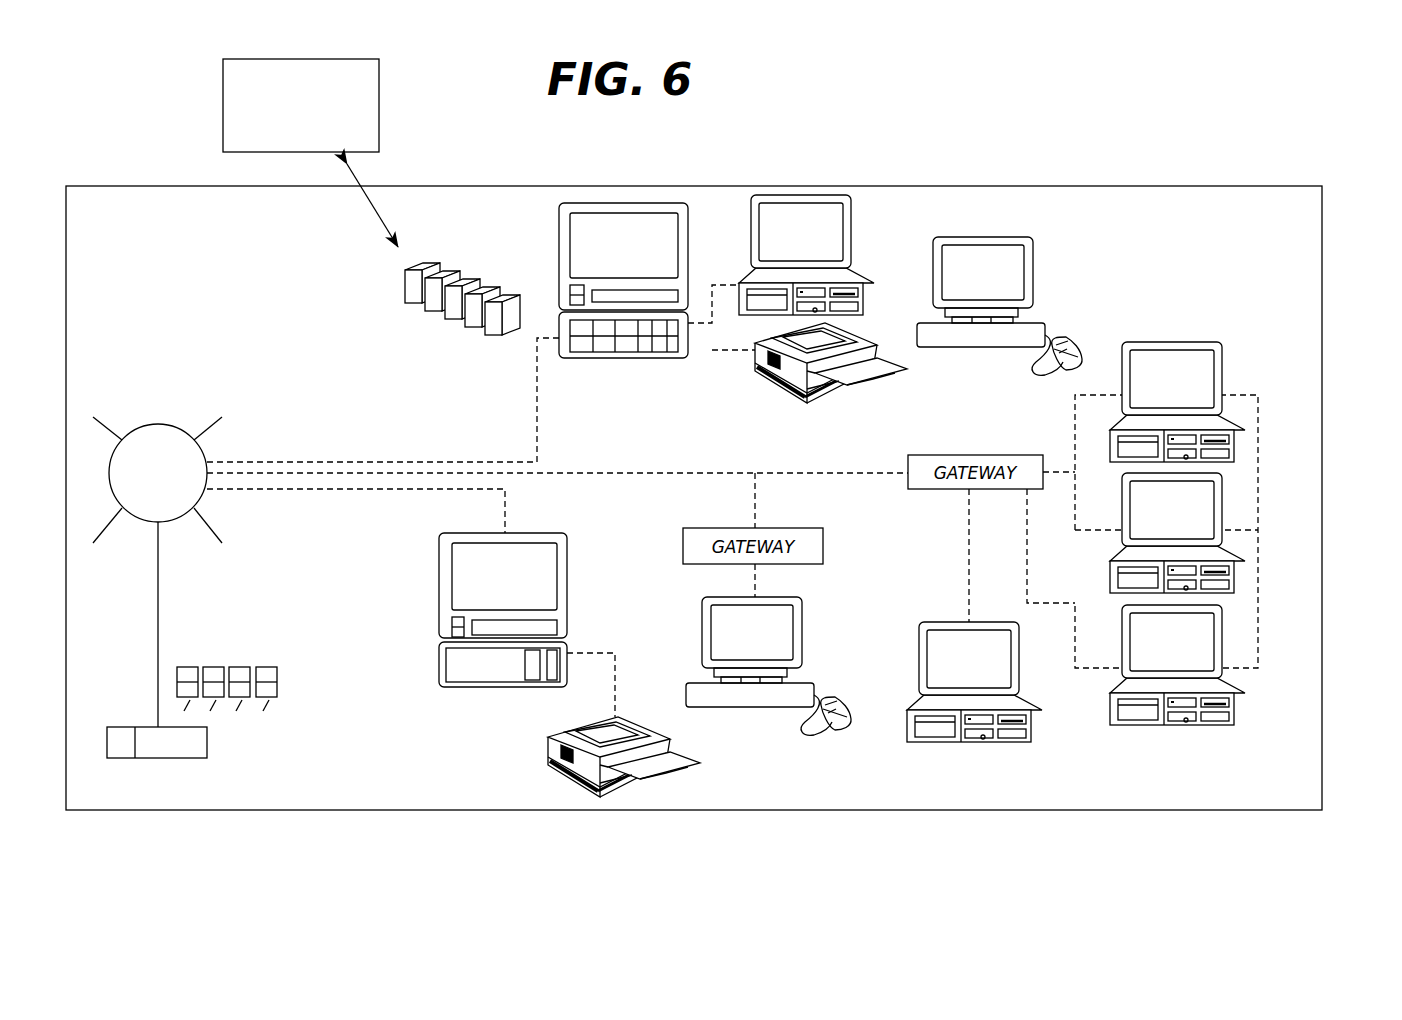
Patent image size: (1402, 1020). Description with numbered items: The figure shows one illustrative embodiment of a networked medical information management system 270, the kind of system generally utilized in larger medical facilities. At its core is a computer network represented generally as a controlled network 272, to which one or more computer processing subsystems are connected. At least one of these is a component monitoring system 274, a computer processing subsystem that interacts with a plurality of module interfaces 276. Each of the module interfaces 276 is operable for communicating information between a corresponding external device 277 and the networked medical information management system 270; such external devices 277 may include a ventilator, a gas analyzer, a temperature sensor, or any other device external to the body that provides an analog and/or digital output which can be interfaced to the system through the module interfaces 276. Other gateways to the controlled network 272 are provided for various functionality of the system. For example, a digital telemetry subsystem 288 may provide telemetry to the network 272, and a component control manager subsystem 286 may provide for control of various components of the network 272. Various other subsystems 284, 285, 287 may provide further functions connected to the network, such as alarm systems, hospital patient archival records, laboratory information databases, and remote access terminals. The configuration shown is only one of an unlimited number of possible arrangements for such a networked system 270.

The networked medical information management system 270 is at (963, 185).
The controlled network 272 is at (168, 425).
The component monitoring system 274 is at (710, 228).
The module interfaces 276 is at (474, 256).
The external devices 277 is at (223, 128).
The subsystem 284 is at (751, 722).
The subsystem 285 is at (958, 754).
The component control manager subsystem 286 is at (1272, 371).
The subsystem 287 is at (1267, 527).
The digital telemetry subsystem 288 is at (1268, 606).